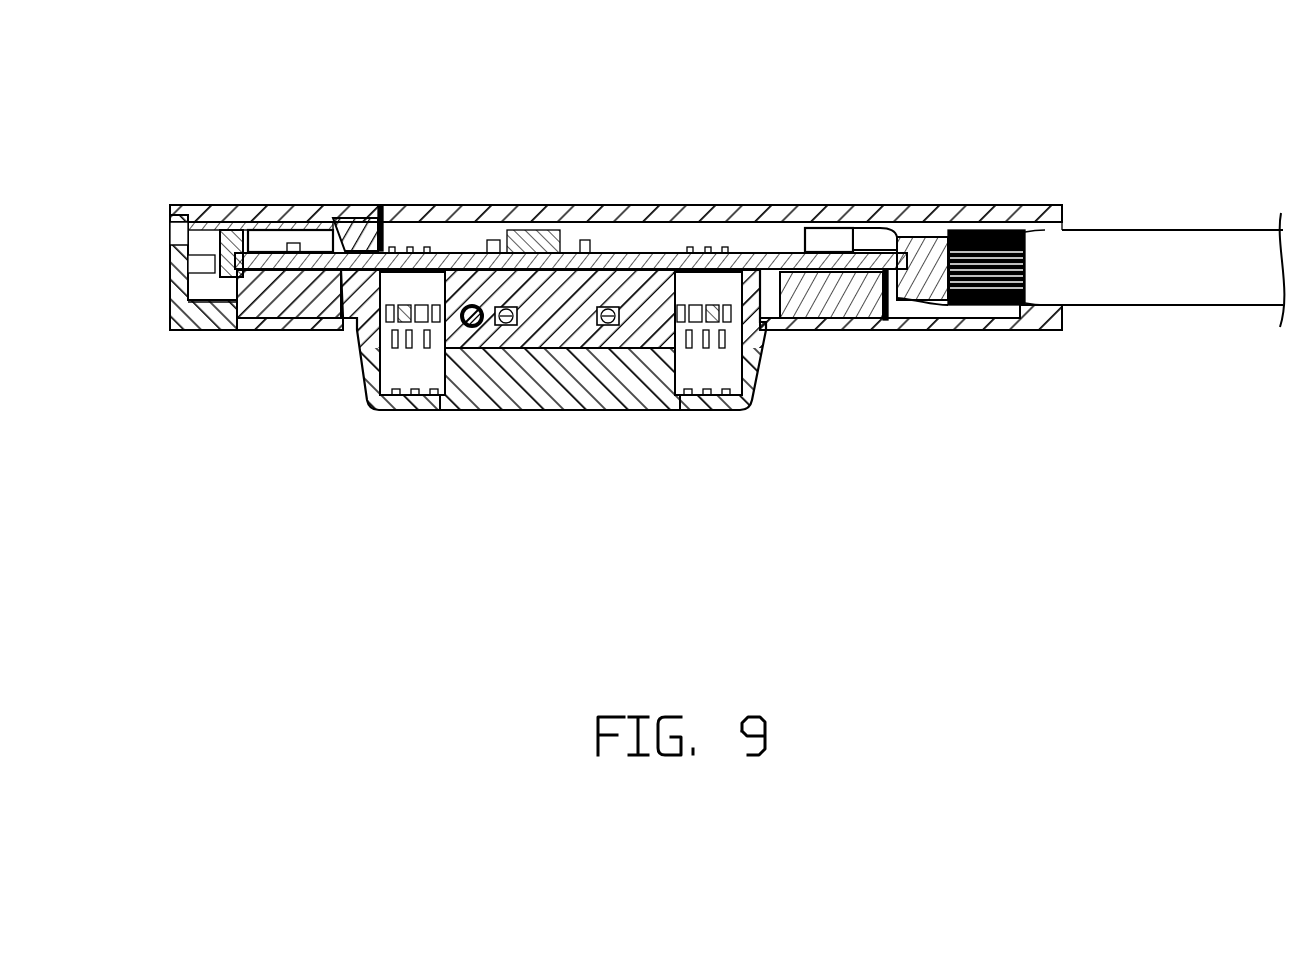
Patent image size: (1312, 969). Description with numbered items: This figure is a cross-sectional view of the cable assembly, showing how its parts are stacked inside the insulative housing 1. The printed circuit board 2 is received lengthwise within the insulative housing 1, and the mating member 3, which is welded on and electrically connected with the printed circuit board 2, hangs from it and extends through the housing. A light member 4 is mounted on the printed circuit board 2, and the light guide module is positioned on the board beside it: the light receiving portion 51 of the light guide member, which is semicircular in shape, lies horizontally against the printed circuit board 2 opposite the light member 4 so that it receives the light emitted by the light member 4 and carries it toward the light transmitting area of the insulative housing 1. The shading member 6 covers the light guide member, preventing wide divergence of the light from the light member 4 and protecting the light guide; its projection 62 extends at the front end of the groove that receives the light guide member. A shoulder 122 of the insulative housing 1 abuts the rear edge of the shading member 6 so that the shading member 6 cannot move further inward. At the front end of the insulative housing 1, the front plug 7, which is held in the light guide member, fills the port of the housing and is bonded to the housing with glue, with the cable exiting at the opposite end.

The insulative housing 1 is at (841, 215).
The printed circuit board 2 is at (662, 262).
The mating member 3 is at (562, 380).
The light member 4 is at (262, 240).
The shading member 6 is at (348, 233).
The front plug 7 is at (175, 277).
The light receiving portion 51 is at (228, 230).
The projection 62 is at (178, 232).
The shoulder 122 is at (380, 207).